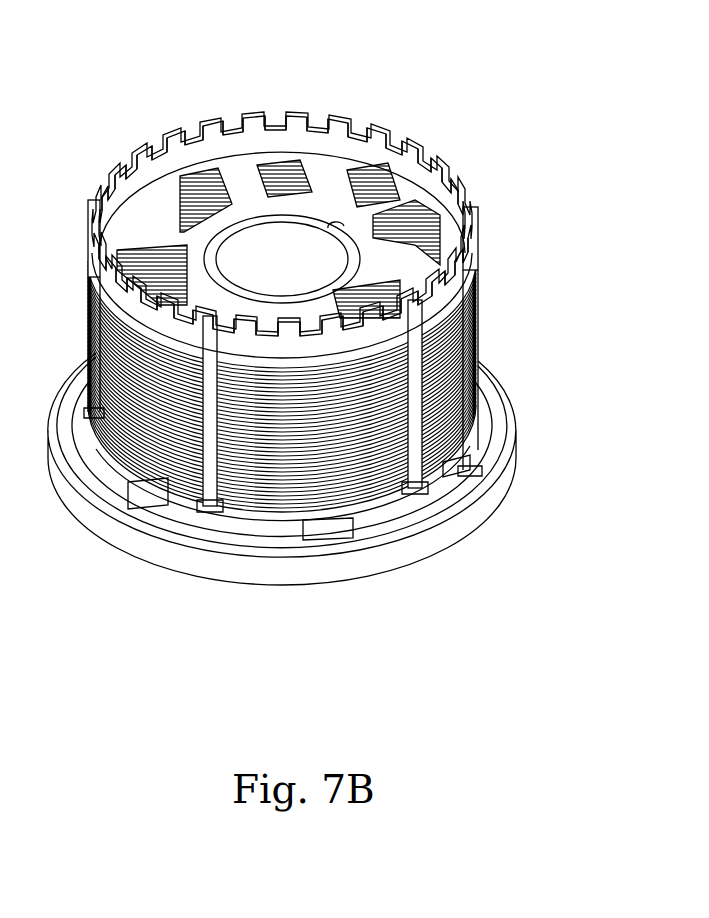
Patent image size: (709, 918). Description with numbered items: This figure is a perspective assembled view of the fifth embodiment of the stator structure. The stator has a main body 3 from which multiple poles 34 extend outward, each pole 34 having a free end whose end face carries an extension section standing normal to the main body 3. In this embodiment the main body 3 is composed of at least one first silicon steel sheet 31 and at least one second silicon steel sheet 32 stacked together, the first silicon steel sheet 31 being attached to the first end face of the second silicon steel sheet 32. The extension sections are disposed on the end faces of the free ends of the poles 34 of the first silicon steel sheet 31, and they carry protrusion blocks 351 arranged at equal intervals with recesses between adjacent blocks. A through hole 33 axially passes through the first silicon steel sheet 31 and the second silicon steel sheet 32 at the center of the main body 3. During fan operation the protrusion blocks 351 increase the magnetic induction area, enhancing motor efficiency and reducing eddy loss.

The main body 3 is at (371, 273).
The first silicon steel sheet 31 is at (328, 196).
The second silicon steel sheet 32 is at (473, 347).
The through hole 33 is at (267, 267).
The pole 34 is at (247, 177).
The protrusion block 351 is at (342, 130).